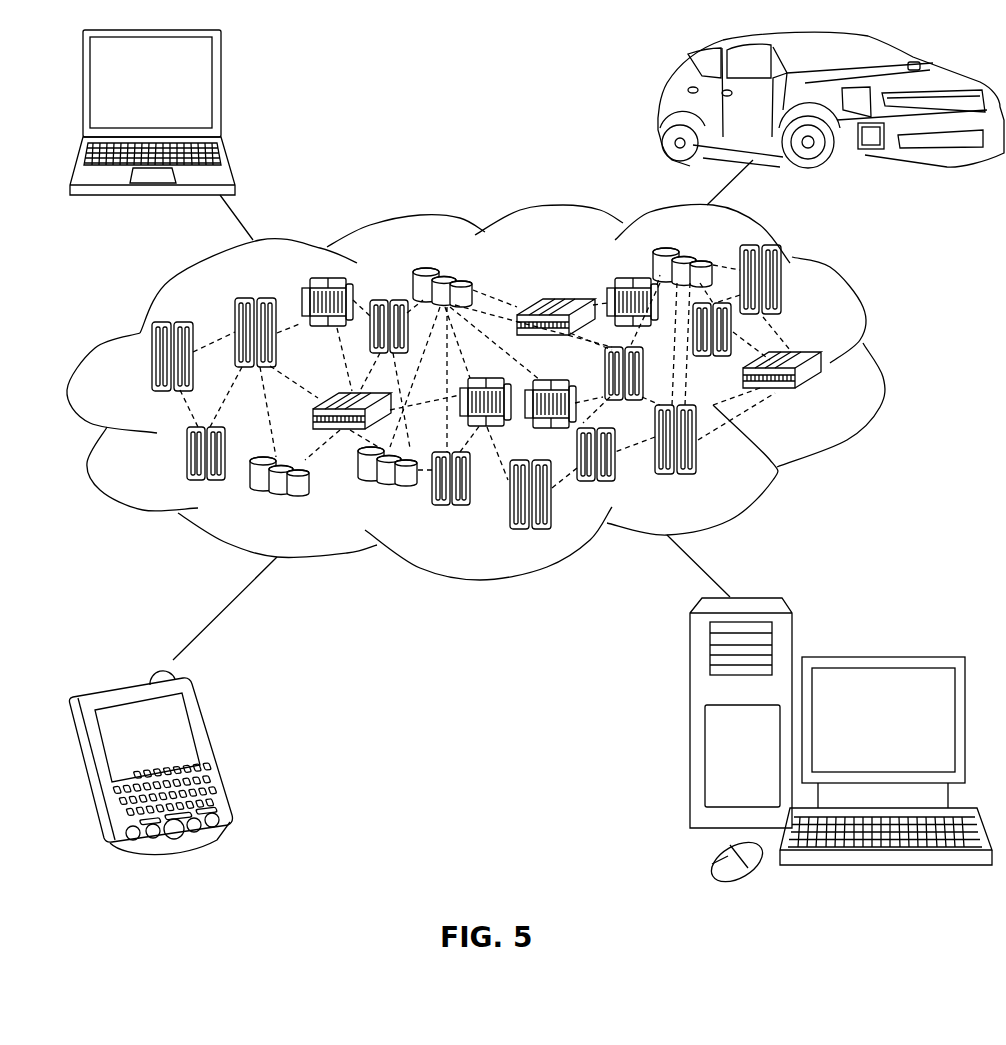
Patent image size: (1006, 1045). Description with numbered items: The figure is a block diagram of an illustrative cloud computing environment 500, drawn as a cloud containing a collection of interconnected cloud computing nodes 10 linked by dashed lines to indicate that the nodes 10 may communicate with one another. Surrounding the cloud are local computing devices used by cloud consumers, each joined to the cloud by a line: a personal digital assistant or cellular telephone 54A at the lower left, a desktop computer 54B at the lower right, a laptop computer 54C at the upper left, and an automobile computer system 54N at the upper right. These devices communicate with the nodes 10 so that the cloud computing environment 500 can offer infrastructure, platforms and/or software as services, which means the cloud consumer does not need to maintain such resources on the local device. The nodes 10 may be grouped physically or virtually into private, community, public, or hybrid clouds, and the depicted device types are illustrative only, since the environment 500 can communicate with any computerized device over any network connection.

The cloud computing environment 500 is at (880, 368).
The cloud computing node 10 is at (823, 397).
The personal digital assistant or cellular telephone 54A is at (210, 750).
The desktop computer 54B is at (880, 657).
The laptop computer 54C is at (222, 92).
The automobile computer system 54N is at (660, 108).